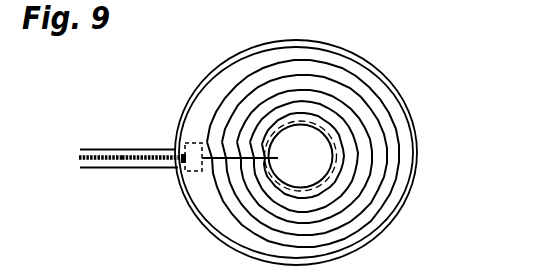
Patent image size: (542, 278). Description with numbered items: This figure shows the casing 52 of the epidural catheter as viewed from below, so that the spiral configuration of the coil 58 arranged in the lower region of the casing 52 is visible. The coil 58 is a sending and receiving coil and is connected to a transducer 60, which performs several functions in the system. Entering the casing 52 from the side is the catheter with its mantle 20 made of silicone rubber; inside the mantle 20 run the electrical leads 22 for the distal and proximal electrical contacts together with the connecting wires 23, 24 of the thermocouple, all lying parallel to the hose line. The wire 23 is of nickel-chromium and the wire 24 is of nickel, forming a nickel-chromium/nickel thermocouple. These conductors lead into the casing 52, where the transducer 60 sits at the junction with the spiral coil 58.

The mantle 20 is at (93, 168).
The electrical leads 22 is at (118, 161).
The connecting wire 23 is at (88, 150).
The connecting wire 24 is at (128, 155).
The casing 52 is at (419, 176).
The coil 58 is at (384, 101).
The transducer 60 is at (190, 170).